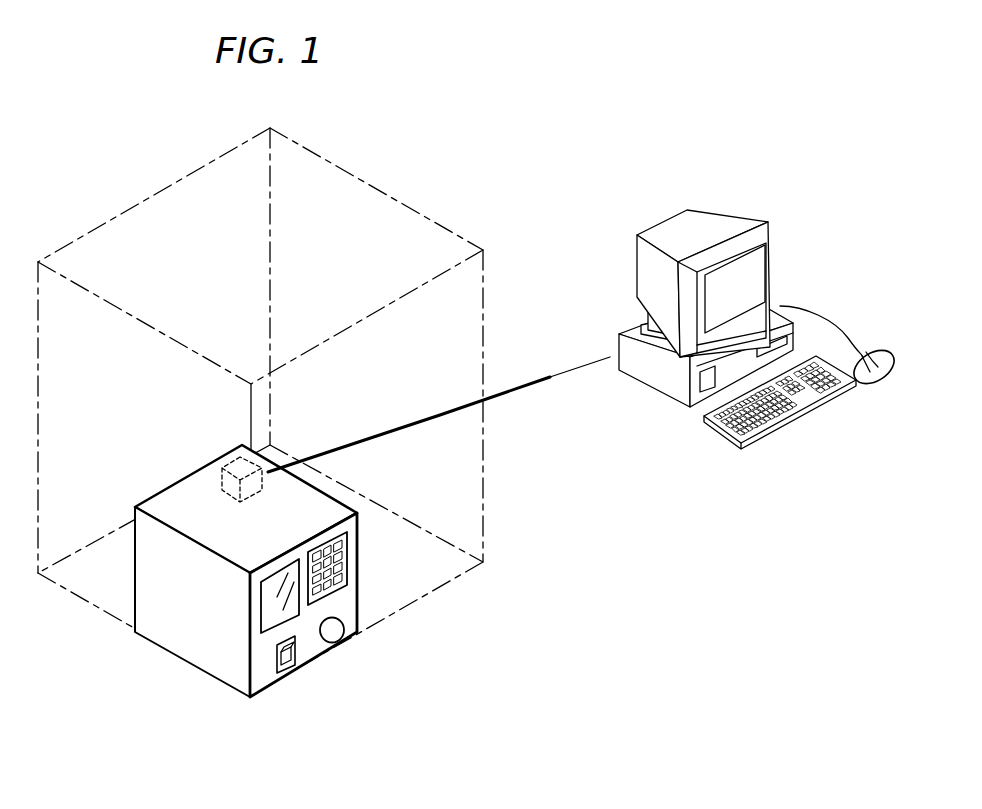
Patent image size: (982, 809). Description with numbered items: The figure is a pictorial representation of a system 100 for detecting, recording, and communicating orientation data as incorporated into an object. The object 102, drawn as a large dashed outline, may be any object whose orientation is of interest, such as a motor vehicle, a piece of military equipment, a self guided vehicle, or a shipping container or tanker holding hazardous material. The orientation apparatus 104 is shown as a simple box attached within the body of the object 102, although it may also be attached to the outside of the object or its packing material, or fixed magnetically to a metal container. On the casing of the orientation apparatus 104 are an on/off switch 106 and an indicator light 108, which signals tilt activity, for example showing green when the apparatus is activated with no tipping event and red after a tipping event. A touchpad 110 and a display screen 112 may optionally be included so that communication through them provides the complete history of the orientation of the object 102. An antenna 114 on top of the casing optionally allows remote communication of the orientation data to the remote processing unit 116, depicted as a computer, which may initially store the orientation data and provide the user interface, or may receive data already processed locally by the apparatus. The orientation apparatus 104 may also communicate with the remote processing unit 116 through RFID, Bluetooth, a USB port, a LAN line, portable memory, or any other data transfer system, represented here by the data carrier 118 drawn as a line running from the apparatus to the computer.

The system 100 is at (582, 100).
The object 102 is at (120, 202).
The orientation apparatus 104 is at (204, 660).
The switch 106 is at (297, 673).
The indicator light 108 is at (342, 644).
The touchpad 110 is at (360, 567).
The display screen 112 is at (272, 588).
The antenna 114 is at (222, 477).
The remote processing unit 116 is at (782, 195).
The data carrier 118 is at (552, 380).